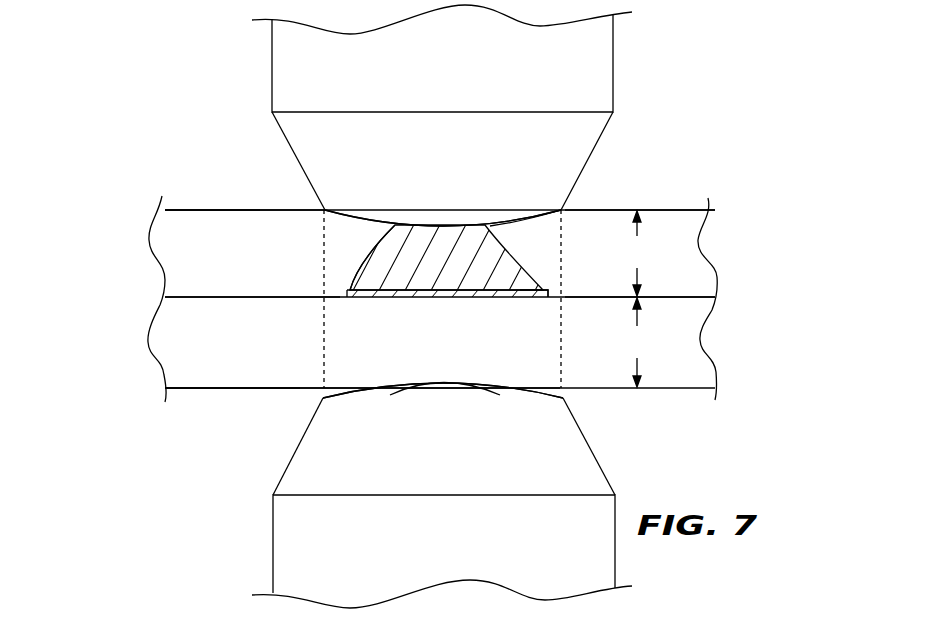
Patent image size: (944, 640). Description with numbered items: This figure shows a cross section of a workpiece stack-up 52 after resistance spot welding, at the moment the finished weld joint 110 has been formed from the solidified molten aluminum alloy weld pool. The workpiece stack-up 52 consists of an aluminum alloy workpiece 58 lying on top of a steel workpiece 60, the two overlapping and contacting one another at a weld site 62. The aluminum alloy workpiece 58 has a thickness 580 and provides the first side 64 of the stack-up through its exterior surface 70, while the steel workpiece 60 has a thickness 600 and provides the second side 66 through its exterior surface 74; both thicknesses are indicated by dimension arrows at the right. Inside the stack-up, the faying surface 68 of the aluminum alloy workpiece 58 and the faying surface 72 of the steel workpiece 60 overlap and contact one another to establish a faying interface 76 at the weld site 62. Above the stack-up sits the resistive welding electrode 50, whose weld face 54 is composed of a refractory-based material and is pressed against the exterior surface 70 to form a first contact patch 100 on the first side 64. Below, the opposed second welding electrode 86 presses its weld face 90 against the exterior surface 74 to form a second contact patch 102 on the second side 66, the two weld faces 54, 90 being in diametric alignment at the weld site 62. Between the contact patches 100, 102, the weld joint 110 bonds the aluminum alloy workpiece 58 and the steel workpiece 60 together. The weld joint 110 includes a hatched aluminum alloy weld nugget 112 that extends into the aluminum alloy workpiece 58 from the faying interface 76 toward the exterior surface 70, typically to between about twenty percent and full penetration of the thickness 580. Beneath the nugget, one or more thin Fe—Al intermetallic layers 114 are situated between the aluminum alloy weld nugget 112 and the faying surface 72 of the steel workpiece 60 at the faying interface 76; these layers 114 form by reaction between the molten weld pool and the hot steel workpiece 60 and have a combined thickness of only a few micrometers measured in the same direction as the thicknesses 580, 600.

The resistive welding electrode 50 is at (268, 61).
The workpiece stack-up 52 is at (147, 239).
The weld face 54 is at (532, 224).
The aluminum alloy workpiece 58 is at (690, 258).
The steel workpiece 60 is at (690, 354).
The weld site 62 is at (324, 328).
The first side 64 is at (262, 208).
The second side 66 is at (300, 392).
The faying surface 68 is at (299, 299).
The exterior surface 70 is at (178, 210).
The faying surface 72 is at (572, 298).
The exterior surface 74 is at (197, 390).
The faying interface 76 is at (553, 289).
The second welding electrode 86 is at (268, 524).
The weld face 90 is at (472, 388).
The first contact patch 100 is at (380, 222).
The second contact patch 102 is at (409, 390).
The weld joint 110 is at (514, 248).
The aluminum alloy weld nugget 112 is at (392, 248).
The Fe—Al intermetallic layers 114 is at (423, 298).
The thickness 580 is at (638, 253).
The thickness 600 is at (638, 342).